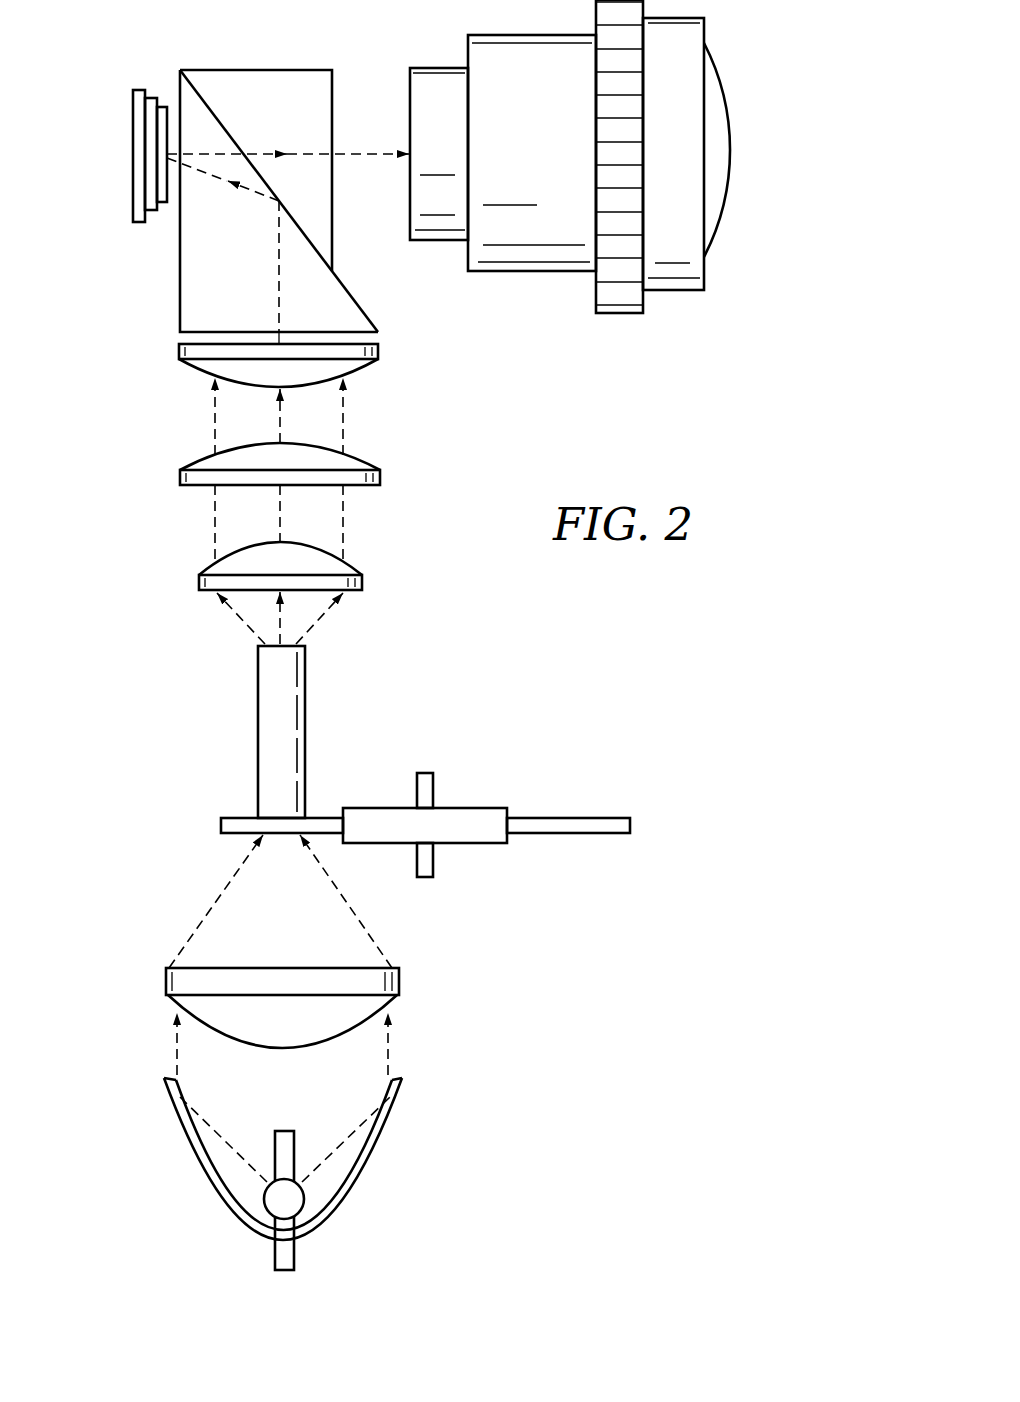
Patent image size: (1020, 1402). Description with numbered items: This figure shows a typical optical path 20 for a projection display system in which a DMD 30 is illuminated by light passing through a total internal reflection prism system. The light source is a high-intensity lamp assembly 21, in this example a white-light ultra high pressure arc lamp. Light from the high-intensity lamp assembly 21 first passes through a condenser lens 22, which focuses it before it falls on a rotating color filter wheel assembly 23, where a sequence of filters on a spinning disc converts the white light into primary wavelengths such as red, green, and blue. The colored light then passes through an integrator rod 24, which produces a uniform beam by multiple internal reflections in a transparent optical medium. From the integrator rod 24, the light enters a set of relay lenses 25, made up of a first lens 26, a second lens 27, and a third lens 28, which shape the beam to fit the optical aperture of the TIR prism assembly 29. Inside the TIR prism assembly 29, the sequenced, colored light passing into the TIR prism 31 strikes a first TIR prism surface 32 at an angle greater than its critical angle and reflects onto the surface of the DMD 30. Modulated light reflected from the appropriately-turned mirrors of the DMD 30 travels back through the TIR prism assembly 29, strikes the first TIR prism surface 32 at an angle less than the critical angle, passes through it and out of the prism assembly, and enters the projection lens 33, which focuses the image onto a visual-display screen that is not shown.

The optical path 20 is at (577, 749).
The high-intensity lamp assembly 21 is at (188, 1150).
The condenser lens 22 is at (166, 984).
The rotating color filter wheel assembly 23 is at (483, 808).
The integrator rod 24 is at (258, 735).
The set of relay lenses 25 is at (190, 511).
The first lens 26 is at (199, 583).
The second lens 27 is at (180, 478).
The third lens 28 is at (378, 352).
The TIR prism assembly 29 is at (224, 195).
The DMD 30 is at (133, 126).
The TIR prism 31 is at (213, 68).
The first TIR prism surface 32 is at (230, 126).
The projection lens 33 is at (730, 152).